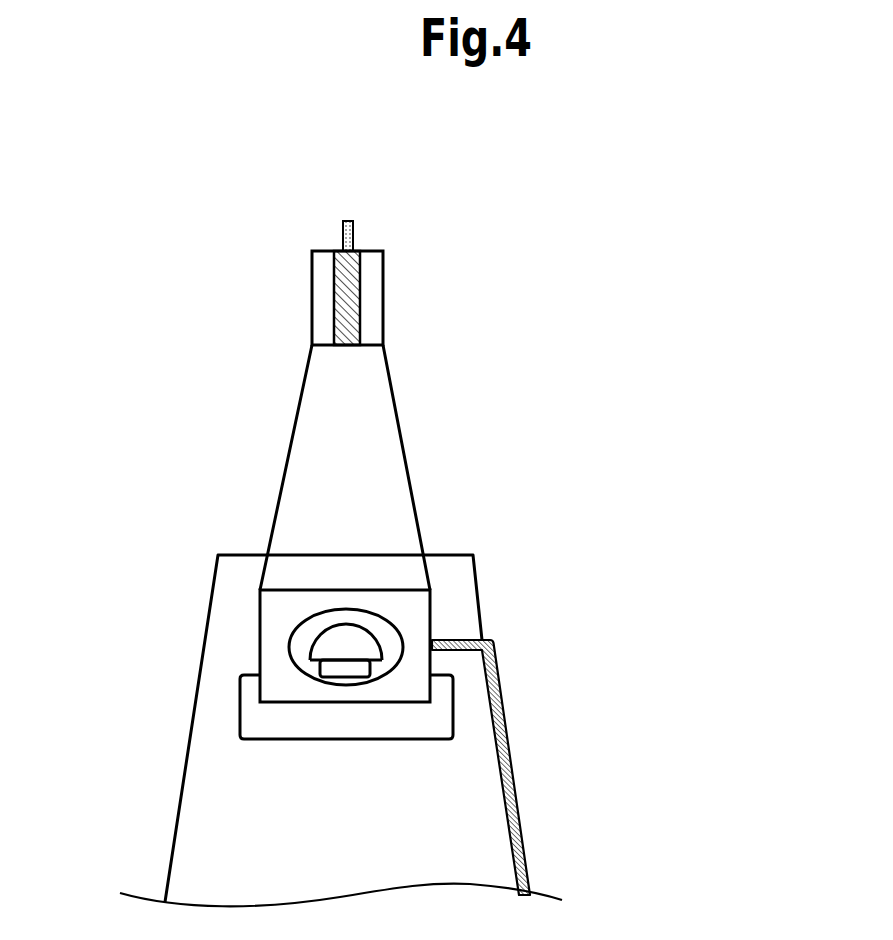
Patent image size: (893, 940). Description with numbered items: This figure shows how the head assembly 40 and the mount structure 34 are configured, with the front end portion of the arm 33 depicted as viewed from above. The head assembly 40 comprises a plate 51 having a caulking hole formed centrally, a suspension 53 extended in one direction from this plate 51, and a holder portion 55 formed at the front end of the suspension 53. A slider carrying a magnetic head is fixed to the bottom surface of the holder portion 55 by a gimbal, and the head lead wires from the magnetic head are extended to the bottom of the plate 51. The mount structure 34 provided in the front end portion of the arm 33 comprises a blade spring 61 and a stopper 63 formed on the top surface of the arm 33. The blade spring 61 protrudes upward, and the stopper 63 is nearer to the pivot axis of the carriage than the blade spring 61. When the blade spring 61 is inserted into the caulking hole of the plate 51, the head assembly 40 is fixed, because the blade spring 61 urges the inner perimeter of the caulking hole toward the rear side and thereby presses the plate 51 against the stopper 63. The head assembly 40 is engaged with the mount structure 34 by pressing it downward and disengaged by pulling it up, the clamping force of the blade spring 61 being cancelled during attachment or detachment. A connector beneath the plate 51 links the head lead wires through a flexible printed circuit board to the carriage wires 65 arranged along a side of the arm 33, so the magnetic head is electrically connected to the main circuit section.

The arm 33 is at (198, 788).
The mount structure 34 is at (333, 730).
The head assembly 40 is at (372, 461).
The plate 51 is at (336, 620).
The suspension 53 is at (300, 430).
The holder portion 55 is at (413, 290).
The blade spring 61 is at (345, 667).
The stopper 63 is at (248, 720).
The carriage wires 65 is at (508, 750).